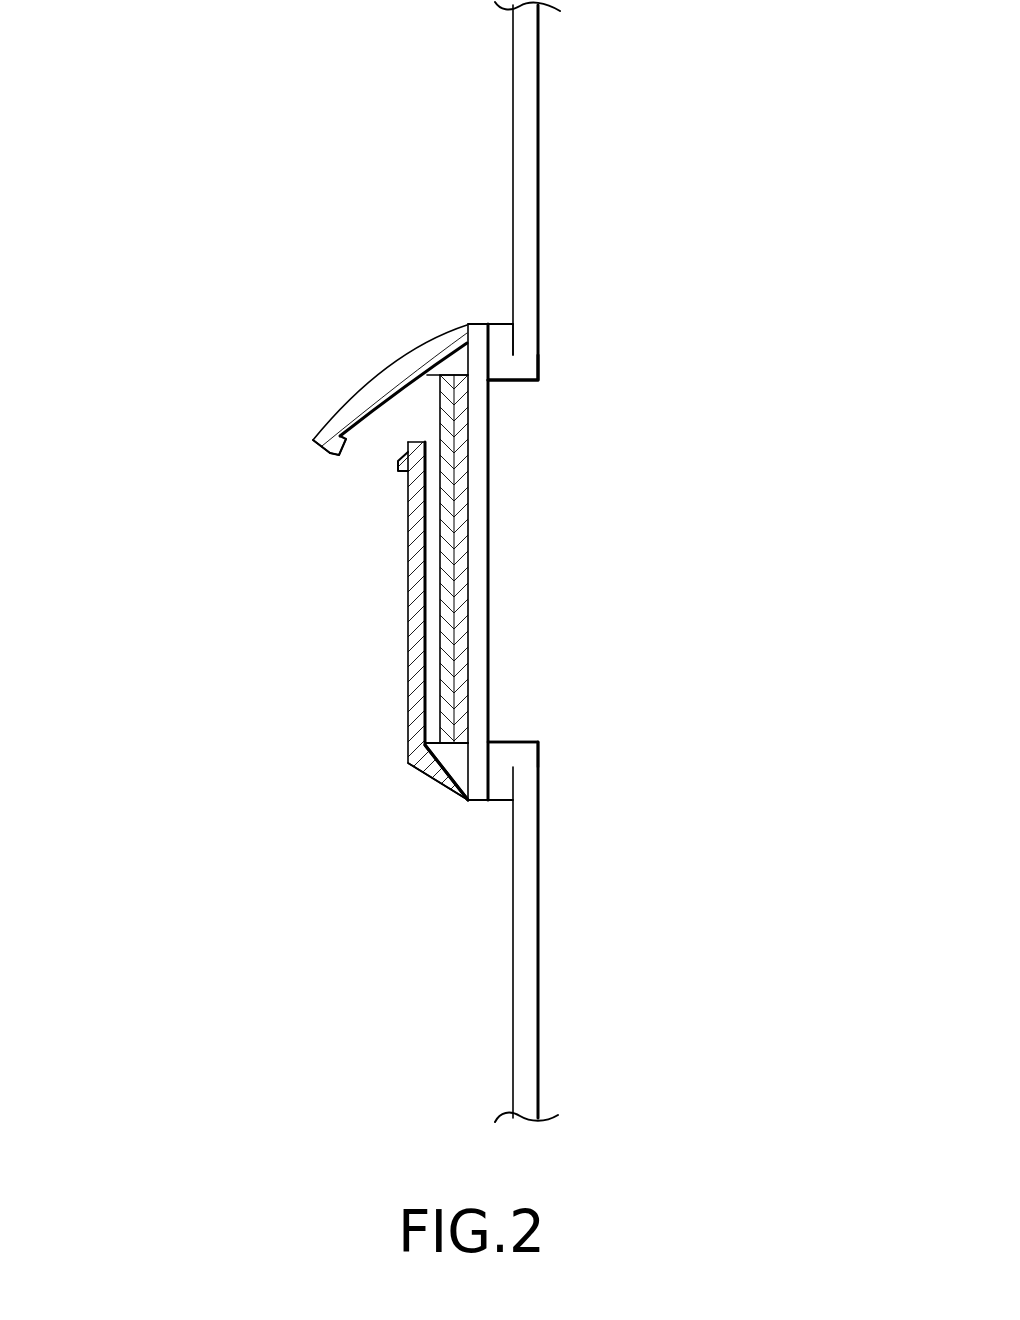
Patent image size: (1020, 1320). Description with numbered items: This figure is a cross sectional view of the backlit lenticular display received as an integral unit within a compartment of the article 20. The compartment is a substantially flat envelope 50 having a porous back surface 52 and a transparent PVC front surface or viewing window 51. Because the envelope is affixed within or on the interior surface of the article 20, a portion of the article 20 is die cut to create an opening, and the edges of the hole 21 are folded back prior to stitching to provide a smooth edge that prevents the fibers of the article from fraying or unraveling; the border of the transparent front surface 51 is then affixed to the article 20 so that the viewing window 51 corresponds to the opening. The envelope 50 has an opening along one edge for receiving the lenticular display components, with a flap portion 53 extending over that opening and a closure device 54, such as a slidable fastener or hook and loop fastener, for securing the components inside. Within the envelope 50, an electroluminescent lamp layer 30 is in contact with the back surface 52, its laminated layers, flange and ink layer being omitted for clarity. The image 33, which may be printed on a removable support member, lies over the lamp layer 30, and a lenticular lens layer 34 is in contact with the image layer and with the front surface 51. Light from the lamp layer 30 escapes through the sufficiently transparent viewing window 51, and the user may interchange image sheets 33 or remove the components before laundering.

The article 20 is at (538, 192).
The edges of the hole 21 is at (525, 393).
The electroluminescent lamp layer 30 is at (435, 673).
The image 33 is at (447, 745).
The lenticular lens layer 34 is at (462, 567).
The envelope 50 is at (220, 363).
The viewing window 51 is at (488, 513).
The back surface 52 is at (417, 570).
The flap portion 53 is at (387, 357).
The closure device 54 is at (318, 462).